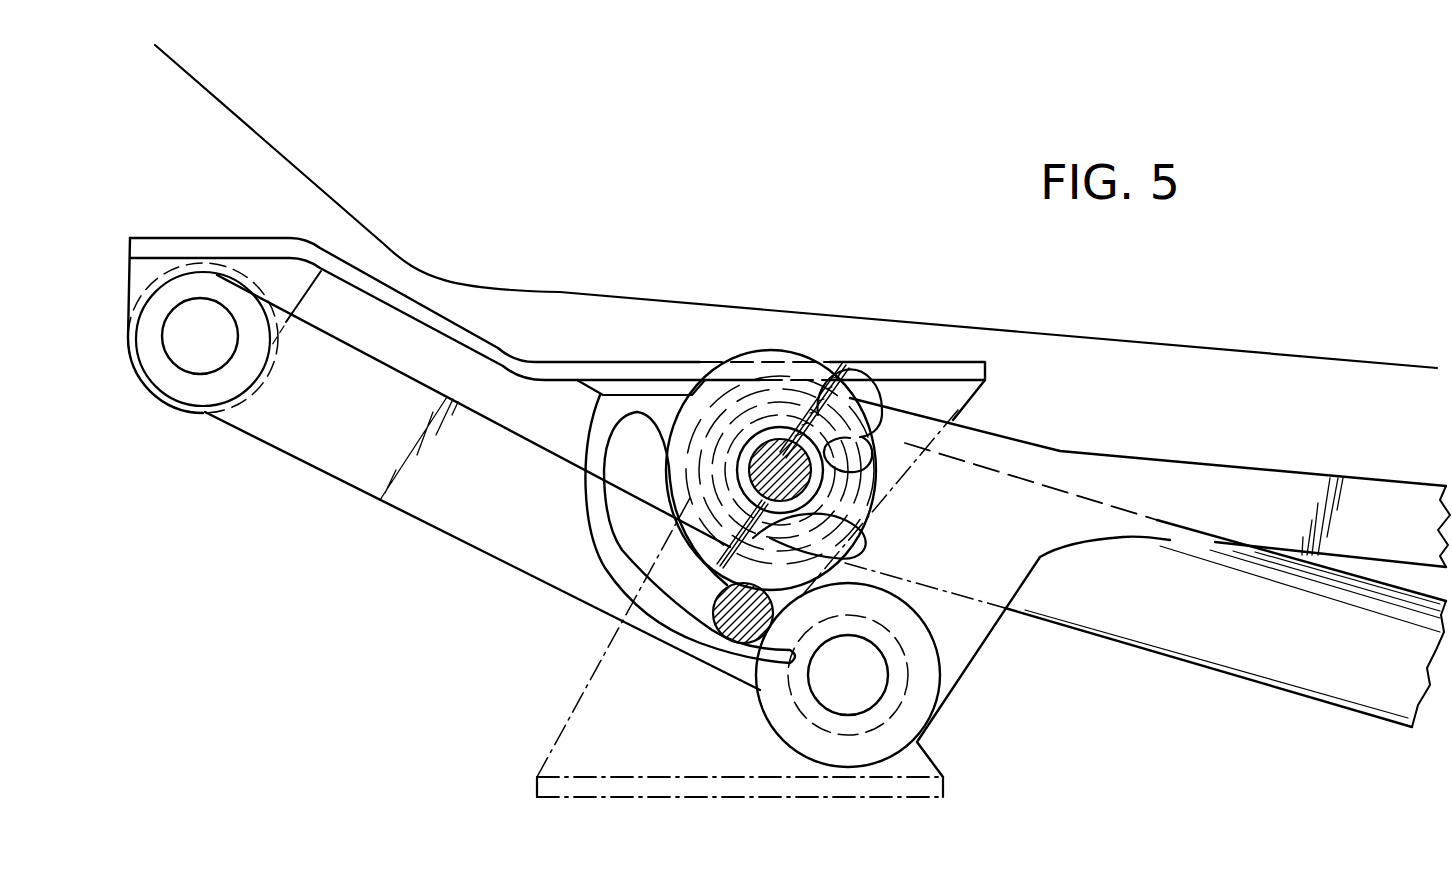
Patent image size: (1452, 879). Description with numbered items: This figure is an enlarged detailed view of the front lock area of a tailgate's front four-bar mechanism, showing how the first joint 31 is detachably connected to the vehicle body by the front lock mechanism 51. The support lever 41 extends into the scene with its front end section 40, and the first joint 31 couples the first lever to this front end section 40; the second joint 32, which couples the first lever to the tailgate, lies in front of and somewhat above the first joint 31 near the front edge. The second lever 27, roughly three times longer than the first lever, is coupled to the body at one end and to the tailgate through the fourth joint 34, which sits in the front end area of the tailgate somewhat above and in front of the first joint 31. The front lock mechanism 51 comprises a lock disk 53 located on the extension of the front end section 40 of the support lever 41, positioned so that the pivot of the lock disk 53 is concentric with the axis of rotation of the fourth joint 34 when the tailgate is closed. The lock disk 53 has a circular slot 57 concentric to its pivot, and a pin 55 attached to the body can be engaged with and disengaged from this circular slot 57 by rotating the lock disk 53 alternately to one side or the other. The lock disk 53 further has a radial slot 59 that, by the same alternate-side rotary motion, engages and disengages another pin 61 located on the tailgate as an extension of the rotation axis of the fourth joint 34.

The second lever 27 is at (1288, 649).
The first joint 31 is at (851, 718).
The second joint 32 is at (205, 344).
The fourth joint 34 is at (778, 426).
The front end section 40 is at (940, 523).
The support lever 41 is at (1258, 494).
The front lock mechanism 51 is at (616, 601).
The lock disk 53 is at (723, 373).
The pin 55 is at (742, 623).
The circular slot 57 is at (650, 533).
The radial slot 59 is at (878, 508).
The pin 61 is at (793, 440).